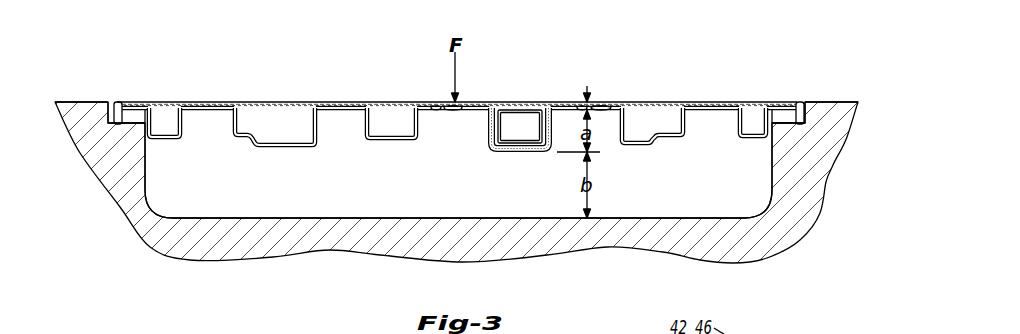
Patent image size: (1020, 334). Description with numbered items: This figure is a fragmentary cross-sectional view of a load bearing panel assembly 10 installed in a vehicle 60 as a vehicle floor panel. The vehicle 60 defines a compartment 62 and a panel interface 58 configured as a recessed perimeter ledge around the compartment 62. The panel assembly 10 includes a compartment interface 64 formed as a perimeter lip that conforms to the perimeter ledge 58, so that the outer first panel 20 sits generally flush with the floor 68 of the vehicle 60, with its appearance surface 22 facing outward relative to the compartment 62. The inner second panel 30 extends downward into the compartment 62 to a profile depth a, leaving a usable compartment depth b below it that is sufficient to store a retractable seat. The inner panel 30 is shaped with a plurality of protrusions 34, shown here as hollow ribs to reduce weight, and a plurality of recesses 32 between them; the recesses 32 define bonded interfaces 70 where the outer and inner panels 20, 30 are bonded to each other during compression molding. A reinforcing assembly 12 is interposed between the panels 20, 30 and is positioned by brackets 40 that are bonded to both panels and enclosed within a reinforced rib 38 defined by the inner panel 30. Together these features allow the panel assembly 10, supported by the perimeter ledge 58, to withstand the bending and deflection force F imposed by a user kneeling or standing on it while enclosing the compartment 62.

The load bearing panel assembly 10 is at (298, 73).
The reinforcing assembly 12 is at (522, 110).
The first panel 20 is at (458, 81).
The appearance surface 22 is at (647, 102).
The second panel 30 is at (459, 154).
The recesses 32 is at (203, 112).
The protrusions 34 is at (160, 141).
The reinforced rib 38 is at (518, 154).
The brackets 40 is at (483, 108).
The panel interface 58 is at (131, 124).
The vehicle 60 is at (834, 211).
The compartment 62 is at (463, 187).
The compartment interface 64 is at (115, 116).
The floor 68 is at (824, 102).
The bonded interfaces 70 is at (209, 104).